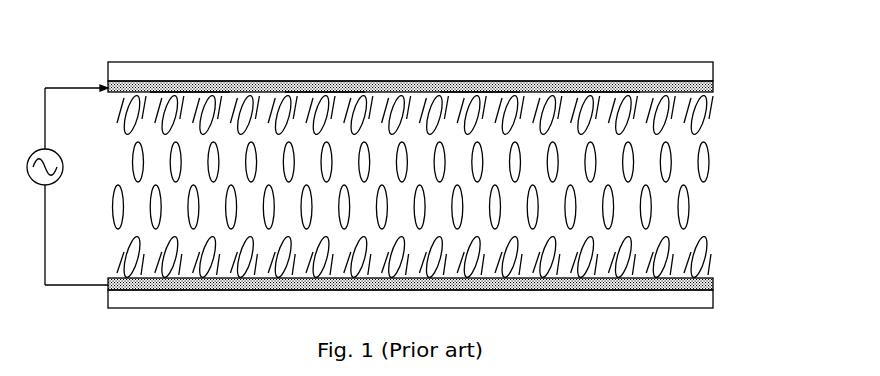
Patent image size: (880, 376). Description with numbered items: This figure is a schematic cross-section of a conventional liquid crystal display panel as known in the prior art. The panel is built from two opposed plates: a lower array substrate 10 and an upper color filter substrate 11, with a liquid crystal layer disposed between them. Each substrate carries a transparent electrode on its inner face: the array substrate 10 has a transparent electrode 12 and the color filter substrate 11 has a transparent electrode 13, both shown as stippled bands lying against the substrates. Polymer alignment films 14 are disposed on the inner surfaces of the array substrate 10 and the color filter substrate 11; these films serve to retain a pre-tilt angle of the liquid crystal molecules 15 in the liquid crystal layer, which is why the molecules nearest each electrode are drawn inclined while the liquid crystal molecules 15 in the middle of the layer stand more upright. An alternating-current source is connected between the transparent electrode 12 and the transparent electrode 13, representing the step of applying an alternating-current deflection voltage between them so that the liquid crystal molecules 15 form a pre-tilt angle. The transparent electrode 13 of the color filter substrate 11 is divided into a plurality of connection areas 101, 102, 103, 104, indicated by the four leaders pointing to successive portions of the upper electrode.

The array substrate 10 is at (715, 298).
The color filter substrate 11 is at (718, 71).
The transparent electrode 12 is at (713, 285).
The transparent electrode 13 is at (718, 89).
The polymer alignment films 14 is at (710, 117).
The liquid crystal molecules 15 is at (710, 163).
The connection area 101 is at (190, 81).
The connection area 102 is at (322, 81).
The connection area 103 is at (478, 81).
The connection area 104 is at (598, 81).